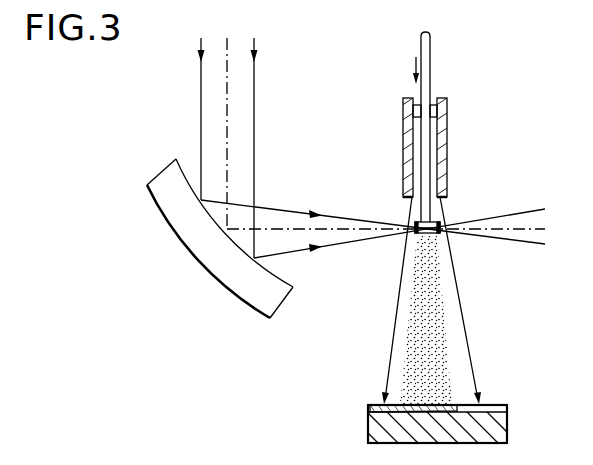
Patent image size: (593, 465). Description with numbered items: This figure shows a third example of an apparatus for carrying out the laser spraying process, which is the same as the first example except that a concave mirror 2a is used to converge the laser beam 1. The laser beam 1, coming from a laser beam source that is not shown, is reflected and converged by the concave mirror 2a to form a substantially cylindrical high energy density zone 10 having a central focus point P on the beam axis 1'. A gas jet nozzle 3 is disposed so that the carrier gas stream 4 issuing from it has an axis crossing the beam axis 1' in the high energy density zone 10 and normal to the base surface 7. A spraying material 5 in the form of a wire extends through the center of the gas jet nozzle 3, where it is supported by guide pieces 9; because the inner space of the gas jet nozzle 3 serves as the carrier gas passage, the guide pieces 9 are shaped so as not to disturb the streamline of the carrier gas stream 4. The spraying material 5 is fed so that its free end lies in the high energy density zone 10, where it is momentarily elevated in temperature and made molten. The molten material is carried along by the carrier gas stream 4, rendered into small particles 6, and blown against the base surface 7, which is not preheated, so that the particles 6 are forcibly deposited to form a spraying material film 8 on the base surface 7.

The laser beam 1 is at (250, 148).
The concave mirror 2a is at (187, 240).
The beam axis 1' is at (373, 214).
The spraying material 5 is at (428, 48).
The gas jet nozzle 3 is at (443, 133).
The guide pieces 9 is at (415, 117).
The focus point P is at (428, 222).
The high energy density zone 10 is at (440, 236).
The carrier gas stream 4 is at (393, 337).
The particles 6 is at (440, 322).
The spraying material film 8 is at (384, 403).
The base surface 7 is at (487, 408).